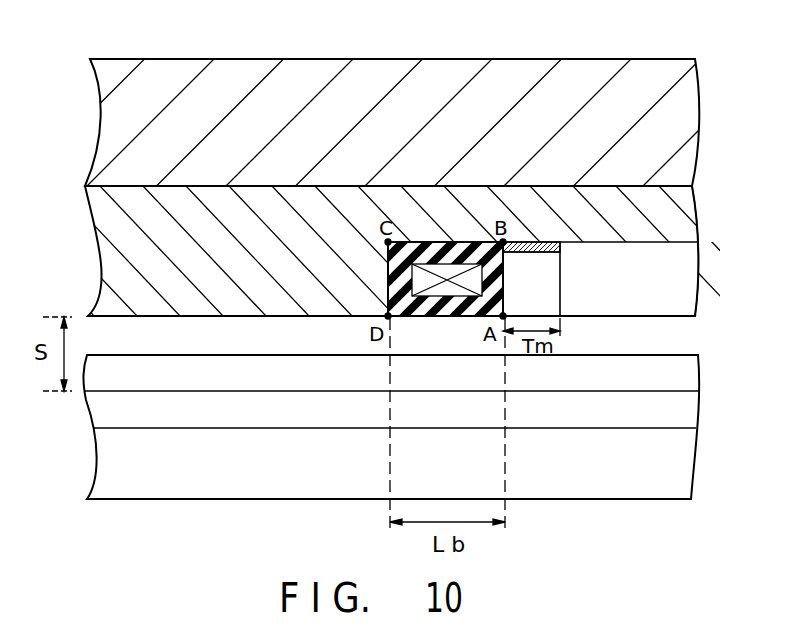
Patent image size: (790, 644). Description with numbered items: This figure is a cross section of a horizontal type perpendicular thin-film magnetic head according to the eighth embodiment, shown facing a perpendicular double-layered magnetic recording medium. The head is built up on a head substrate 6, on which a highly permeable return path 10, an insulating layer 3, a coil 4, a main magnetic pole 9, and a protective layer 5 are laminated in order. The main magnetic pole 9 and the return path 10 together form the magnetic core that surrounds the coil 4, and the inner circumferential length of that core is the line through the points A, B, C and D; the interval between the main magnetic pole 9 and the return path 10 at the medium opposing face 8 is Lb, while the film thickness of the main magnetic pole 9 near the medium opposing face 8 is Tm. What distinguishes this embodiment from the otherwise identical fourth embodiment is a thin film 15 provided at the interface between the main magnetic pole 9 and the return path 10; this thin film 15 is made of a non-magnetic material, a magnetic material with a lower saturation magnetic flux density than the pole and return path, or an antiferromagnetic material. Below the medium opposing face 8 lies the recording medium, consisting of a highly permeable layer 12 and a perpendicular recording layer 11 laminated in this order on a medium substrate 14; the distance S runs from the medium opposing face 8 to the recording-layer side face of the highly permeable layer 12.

The insulating layer 3 is at (440, 246).
The coil 4 is at (478, 286).
The protective layer 5 is at (680, 288).
The head substrate 6 is at (500, 70).
The medium opposing face 8 is at (663, 318).
The main magnetic pole 9 is at (560, 285).
The highly permeable return path 10 is at (118, 257).
The perpendicular recording layer 11 is at (688, 375).
The highly permeable layer 12 is at (680, 412).
The medium substrate 14 is at (675, 462).
The thin film 15 is at (523, 240).